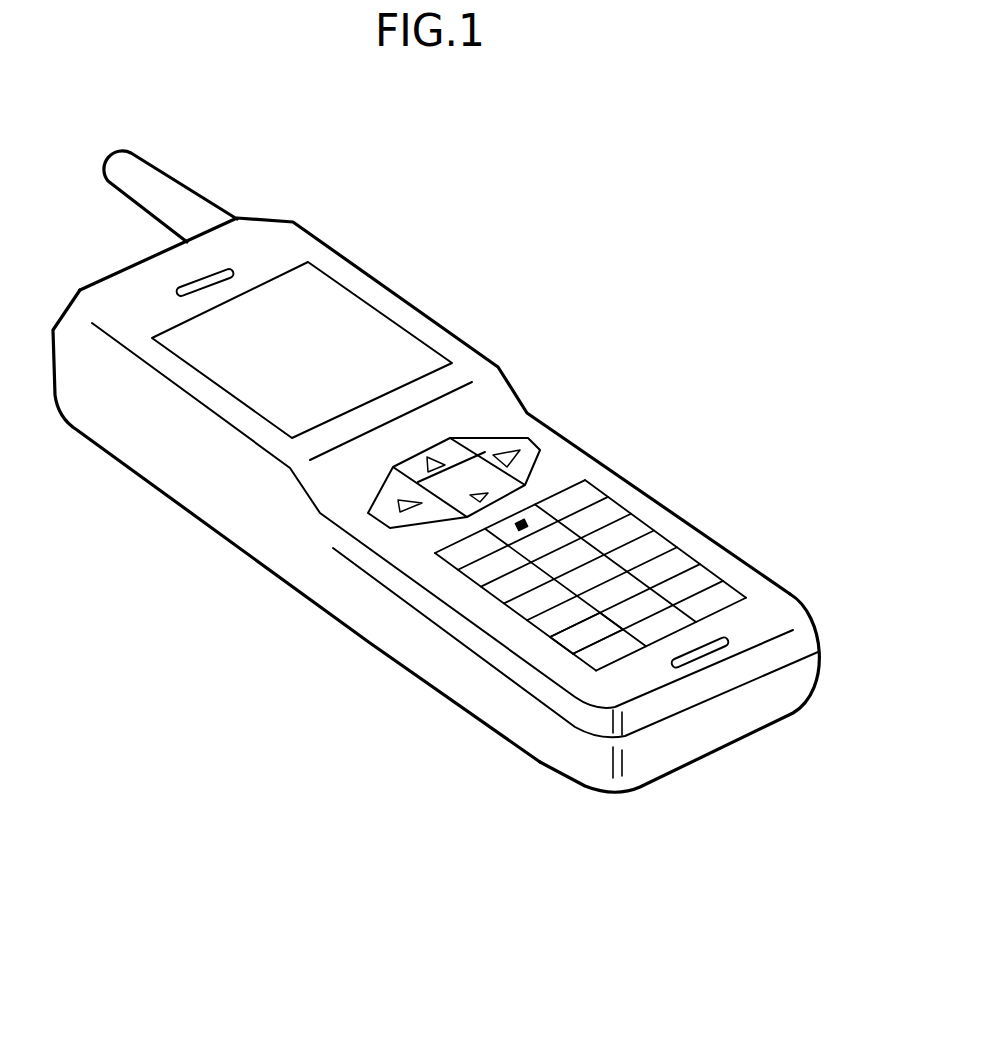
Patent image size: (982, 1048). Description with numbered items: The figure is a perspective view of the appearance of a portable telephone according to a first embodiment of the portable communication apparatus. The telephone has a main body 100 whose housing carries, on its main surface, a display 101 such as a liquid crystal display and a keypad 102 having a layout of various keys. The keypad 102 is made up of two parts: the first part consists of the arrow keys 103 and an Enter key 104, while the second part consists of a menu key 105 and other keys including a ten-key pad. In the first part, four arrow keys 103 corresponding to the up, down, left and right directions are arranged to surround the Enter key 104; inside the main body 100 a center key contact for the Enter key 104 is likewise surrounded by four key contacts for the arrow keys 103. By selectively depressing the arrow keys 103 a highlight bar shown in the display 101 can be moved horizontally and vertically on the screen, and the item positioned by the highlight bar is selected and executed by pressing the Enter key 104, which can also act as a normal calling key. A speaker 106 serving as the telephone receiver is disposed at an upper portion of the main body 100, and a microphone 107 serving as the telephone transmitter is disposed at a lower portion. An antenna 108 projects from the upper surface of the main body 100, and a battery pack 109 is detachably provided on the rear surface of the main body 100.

The main body 100 is at (262, 620).
The display 101 is at (348, 318).
The keypad 102 is at (820, 562).
The arrow keys 103 is at (527, 467).
The Enter key 104 is at (473, 470).
The menu key 105 is at (572, 641).
The speaker 106 is at (233, 270).
The microphone 107 is at (727, 641).
The antenna 108 is at (178, 177).
The battery pack 109 is at (583, 768).